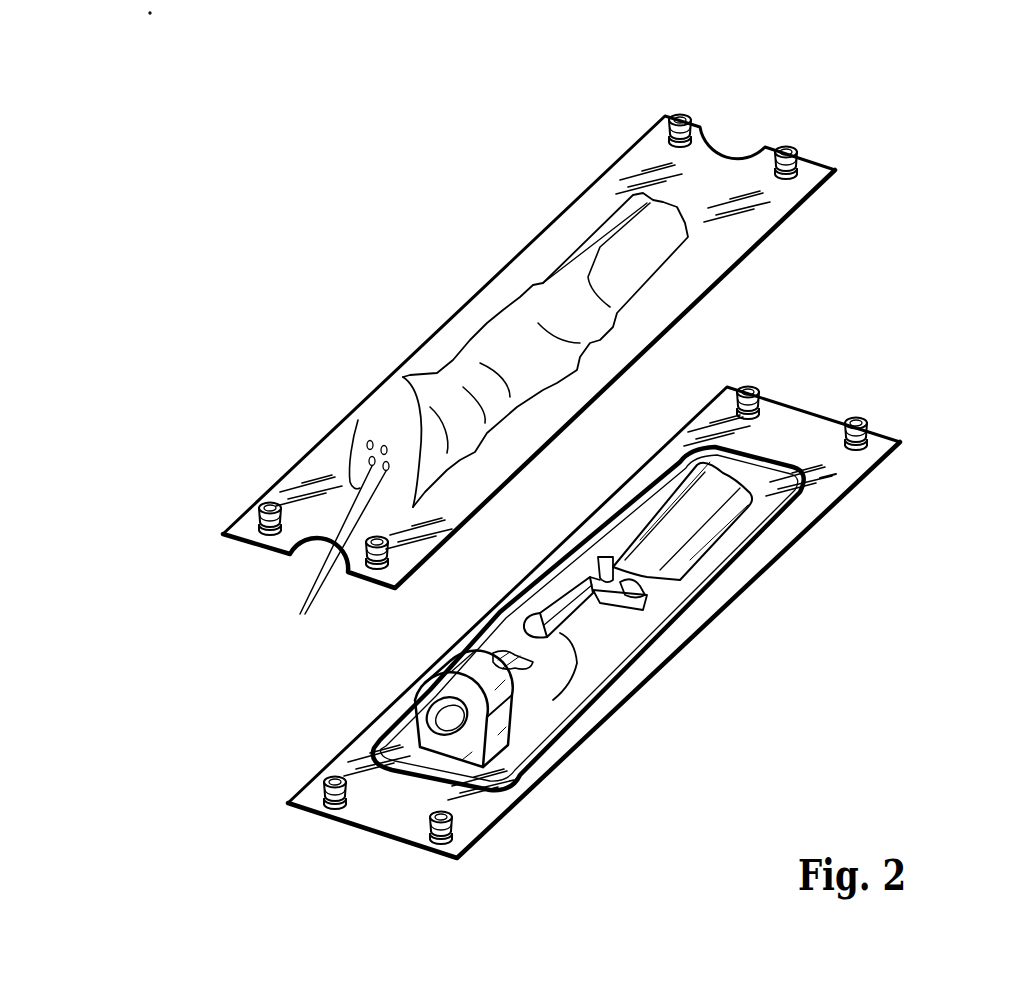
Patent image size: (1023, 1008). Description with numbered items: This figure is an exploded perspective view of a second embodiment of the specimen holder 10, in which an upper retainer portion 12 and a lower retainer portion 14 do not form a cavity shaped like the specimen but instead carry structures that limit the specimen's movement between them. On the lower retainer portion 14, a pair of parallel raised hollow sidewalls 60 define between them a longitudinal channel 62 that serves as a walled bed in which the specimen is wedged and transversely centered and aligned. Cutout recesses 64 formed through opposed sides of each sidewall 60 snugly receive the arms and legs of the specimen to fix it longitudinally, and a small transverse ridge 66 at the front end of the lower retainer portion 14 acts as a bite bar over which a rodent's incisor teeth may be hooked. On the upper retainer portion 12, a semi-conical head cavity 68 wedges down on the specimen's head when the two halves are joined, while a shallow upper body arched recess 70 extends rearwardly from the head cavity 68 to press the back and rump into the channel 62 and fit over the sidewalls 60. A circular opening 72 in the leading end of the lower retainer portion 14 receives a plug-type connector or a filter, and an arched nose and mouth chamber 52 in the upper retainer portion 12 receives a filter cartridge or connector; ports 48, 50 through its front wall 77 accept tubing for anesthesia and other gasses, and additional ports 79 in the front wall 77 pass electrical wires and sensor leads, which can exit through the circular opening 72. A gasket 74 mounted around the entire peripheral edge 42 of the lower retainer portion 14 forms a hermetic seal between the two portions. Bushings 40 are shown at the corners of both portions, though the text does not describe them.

The specimen holder 10 is at (945, 190).
The upper retainer portion 12 is at (365, 272).
The lower retainer portion 14 is at (868, 627).
The fastener bushing 40 is at (672, 118).
The peripheral edge 42 is at (832, 476).
The port 48 is at (367, 445).
The port 50 is at (369, 458).
The nose and mouth chamber 52 is at (385, 400).
The raised hollow sidewalls 60 is at (560, 617).
The longitudinal channel 62 is at (625, 548).
The cutout recesses 64 is at (603, 560).
The transverse ridge 66 is at (502, 655).
The head cavity 68 is at (400, 385).
The upper body arched recess 70 is at (503, 335).
The circular opening 72 is at (437, 725).
The gasket 74 is at (790, 512).
The front wall 77 is at (358, 428).
The additional ports 79 is at (326, 556).